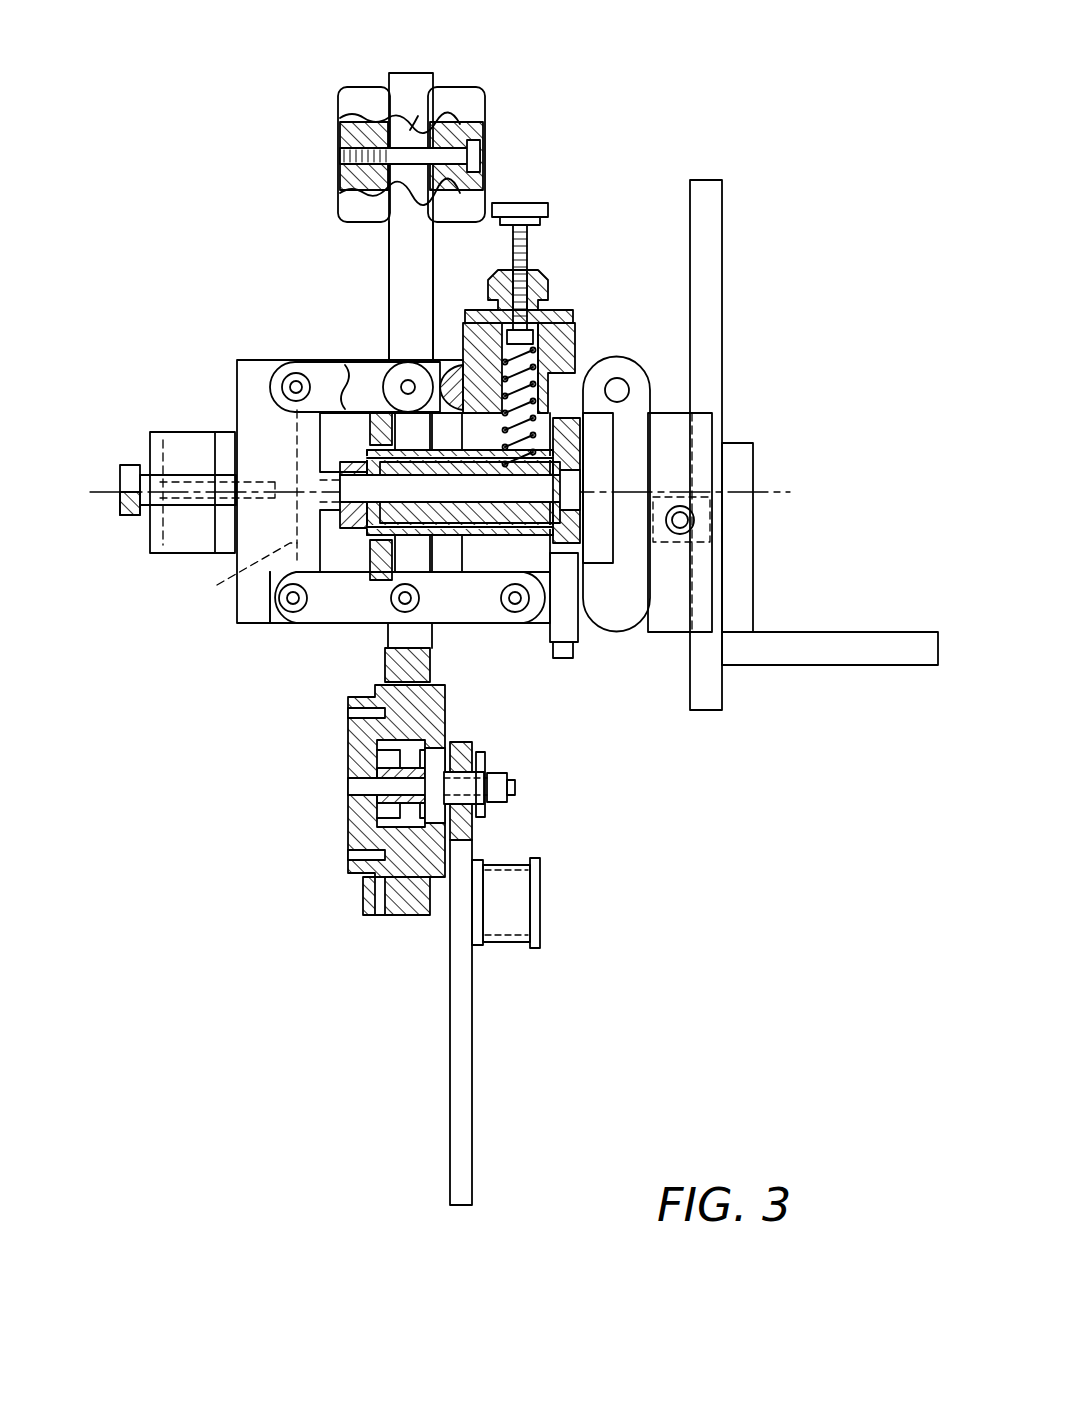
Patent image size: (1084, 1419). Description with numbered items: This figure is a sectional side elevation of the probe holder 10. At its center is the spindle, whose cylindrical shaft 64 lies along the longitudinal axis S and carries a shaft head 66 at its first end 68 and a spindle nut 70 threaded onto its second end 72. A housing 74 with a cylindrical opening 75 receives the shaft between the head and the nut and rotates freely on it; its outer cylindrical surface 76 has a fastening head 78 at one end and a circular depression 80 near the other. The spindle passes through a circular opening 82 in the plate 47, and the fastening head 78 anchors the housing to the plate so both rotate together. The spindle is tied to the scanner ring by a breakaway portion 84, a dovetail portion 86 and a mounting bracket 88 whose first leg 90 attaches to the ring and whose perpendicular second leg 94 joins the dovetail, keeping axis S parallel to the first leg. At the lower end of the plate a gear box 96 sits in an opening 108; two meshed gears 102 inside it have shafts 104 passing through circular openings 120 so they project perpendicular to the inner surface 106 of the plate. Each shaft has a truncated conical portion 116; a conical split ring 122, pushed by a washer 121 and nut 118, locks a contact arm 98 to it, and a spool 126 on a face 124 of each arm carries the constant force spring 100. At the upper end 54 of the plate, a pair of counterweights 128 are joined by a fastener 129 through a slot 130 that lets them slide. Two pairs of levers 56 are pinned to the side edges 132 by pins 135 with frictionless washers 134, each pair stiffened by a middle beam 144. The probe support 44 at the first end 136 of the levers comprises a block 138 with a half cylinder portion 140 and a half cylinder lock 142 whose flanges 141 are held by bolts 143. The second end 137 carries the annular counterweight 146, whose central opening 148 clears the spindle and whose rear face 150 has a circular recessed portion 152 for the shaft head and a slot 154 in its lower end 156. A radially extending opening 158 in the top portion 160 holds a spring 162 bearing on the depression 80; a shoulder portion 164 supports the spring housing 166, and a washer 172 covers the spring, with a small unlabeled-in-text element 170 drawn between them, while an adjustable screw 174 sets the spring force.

The probe holder 10 is at (297, 293).
The probe support 44 is at (232, 423).
The plate 47 is at (390, 230).
The upper end of the plate 54 is at (410, 72).
The levers 56 is at (345, 610).
The cylindrical shaft 64 is at (370, 454).
The shaft head 66 is at (593, 525).
The first end of the shaft 68 is at (587, 468).
The spindle nut 70 is at (340, 472).
The second end of the shaft 72 is at (350, 463).
The housing 74 is at (420, 450).
The cylindrical opening 75 is at (375, 540).
The outer cylindrical surface 76 is at (542, 542).
The fastening head 78 is at (382, 370).
The circular depression 80 is at (545, 442).
The circular opening 82 is at (438, 541).
The breakaway portion 84 is at (627, 628).
The dovetail portion 86 is at (730, 413).
The mounting bracket 88 is at (745, 608).
The first leg 90 is at (860, 652).
The second leg 94 is at (745, 548).
The gear box 96 is at (350, 728).
The contact arms 98 is at (450, 1113).
The constant force spring 100 is at (530, 856).
The meshed gears 102 is at (388, 803).
The gear shaft 104 is at (487, 769).
The inner surface of the plate 106 is at (440, 666).
The opening of the plate 108 is at (430, 685).
The truncated conical portion 116 is at (487, 762).
The nut 118 is at (505, 773).
The circular openings 120 is at (465, 822).
The washer 121 is at (492, 795).
The conical split rings 122 is at (482, 810).
The face of contact arm 124 is at (473, 1060).
The spool 126 is at (528, 898).
The counterweights 128 is at (363, 70).
The fastener 129 is at (458, 118).
The slot 130 is at (420, 110).
The side edges of the plate 132 is at (388, 268).
The frictionless washer 134 is at (408, 372).
The pin 135 is at (368, 344).
The first end of the levers 136 is at (293, 615).
The second end of the levers 137 is at (525, 640).
The block 138 is at (240, 615).
The half cylinder portion 140 is at (236, 577).
The flanges 141 is at (205, 438).
The half cylinder lock 142 is at (182, 548).
The bolt 143 is at (125, 505).
The middle beam 144 is at (448, 362).
The annular counterweight 146 is at (560, 655).
The central opening 148 is at (620, 434).
The rear face 150 is at (565, 382).
The circular recessed portion 152 is at (583, 404).
The slot 154 is at (563, 652).
The lower end of the rear face 156 is at (585, 641).
The radially extending opening 158 is at (530, 416).
The top portion 160 is at (615, 362).
The spring 162 is at (550, 345).
The shoulder portion 164 is at (542, 320).
The spring housing 166 is at (530, 258).
The plunger 170 is at (520, 337).
The washer 172 is at (530, 295).
The adjustable plunger or screw 174 is at (510, 203).
The longitudinal axis S is at (103, 488).